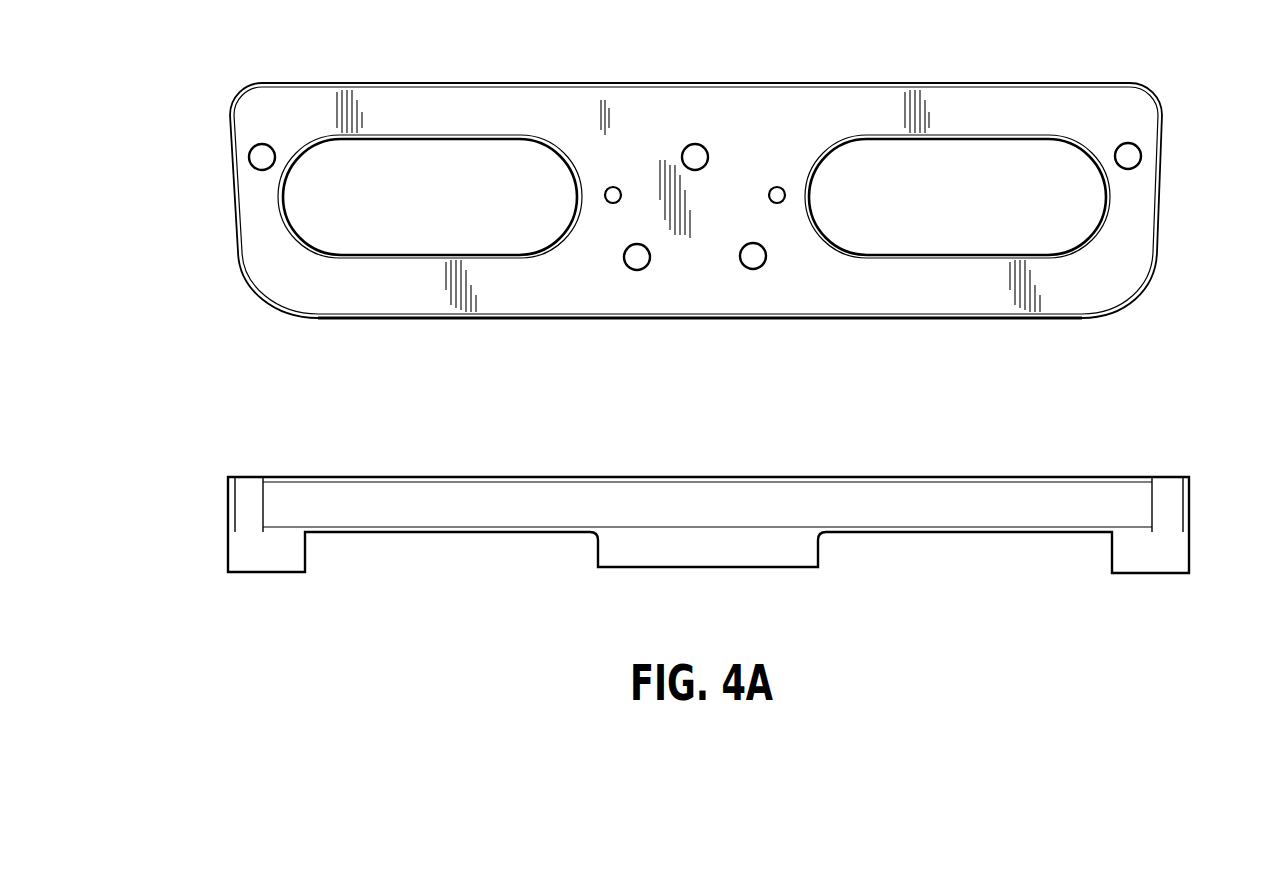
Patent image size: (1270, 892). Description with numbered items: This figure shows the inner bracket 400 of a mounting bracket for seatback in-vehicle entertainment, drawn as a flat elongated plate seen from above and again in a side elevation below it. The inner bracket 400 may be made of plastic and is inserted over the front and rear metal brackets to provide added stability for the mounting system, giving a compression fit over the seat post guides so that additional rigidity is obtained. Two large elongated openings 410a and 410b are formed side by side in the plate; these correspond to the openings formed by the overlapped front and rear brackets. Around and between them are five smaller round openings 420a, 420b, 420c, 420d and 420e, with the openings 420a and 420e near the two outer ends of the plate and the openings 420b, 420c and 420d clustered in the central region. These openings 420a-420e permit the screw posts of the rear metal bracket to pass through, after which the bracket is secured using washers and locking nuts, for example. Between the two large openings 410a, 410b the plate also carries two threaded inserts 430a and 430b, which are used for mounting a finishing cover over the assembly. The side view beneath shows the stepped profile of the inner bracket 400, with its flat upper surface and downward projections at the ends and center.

The inner bracket 400 is at (422, 328).
The opening 410a is at (420, 183).
The opening 410b is at (895, 168).
The opening 420a is at (250, 160).
The opening 420b is at (645, 265).
The opening 420c is at (690, 146).
The opening 420d is at (762, 263).
The opening 420e is at (1138, 155).
The threaded insert 430a is at (604, 181).
The threaded insert 430b is at (768, 183).